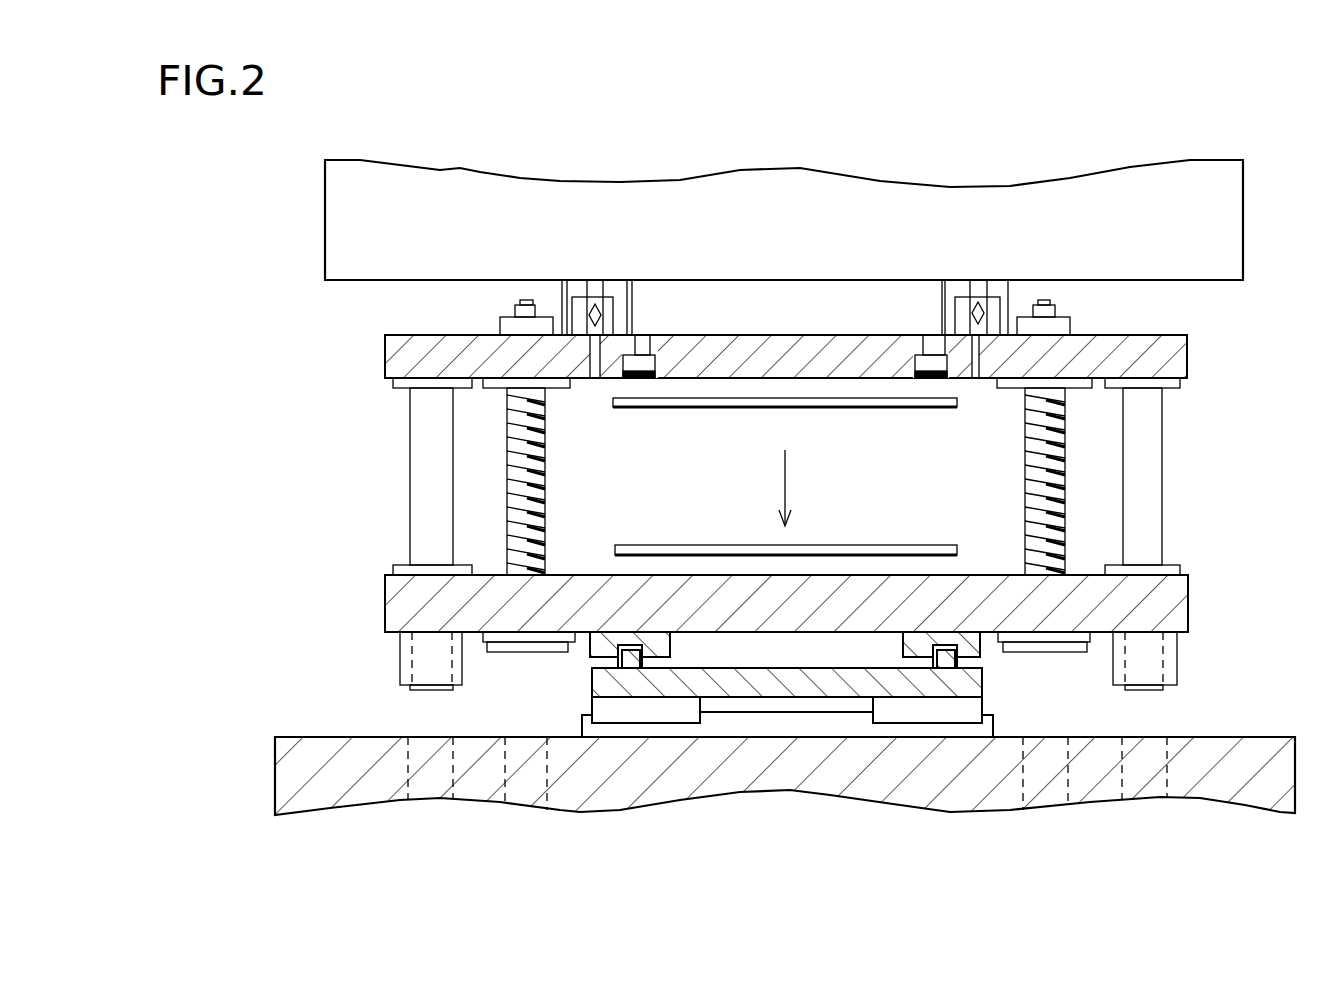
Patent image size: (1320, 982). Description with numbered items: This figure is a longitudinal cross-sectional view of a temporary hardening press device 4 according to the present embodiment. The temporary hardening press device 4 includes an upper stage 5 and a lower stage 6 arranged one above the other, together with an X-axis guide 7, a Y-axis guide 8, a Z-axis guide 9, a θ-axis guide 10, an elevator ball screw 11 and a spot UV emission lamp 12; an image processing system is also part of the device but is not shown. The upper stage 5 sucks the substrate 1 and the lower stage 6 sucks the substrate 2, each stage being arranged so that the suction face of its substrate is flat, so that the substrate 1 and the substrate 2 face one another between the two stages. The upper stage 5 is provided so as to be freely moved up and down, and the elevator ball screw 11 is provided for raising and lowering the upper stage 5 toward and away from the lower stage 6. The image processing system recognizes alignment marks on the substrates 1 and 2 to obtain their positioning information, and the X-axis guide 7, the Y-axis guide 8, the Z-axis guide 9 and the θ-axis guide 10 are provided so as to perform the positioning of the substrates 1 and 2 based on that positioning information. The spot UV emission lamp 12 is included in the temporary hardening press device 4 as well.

The substrate 1 is at (777, 396).
The substrate 2 is at (855, 545).
The temporary hardening press device 4 is at (450, 150).
The upper stage 5 is at (679, 342).
The lower stage 6 is at (963, 590).
The X-axis guide 7 is at (828, 722).
The Y-axis guide 8 is at (626, 650).
The Z-axis guide 9 is at (1145, 453).
The θ-axis guide 10 is at (979, 300).
The elevator ball screw 11 is at (1035, 462).
The spot UV emission lamp 12 is at (932, 352).